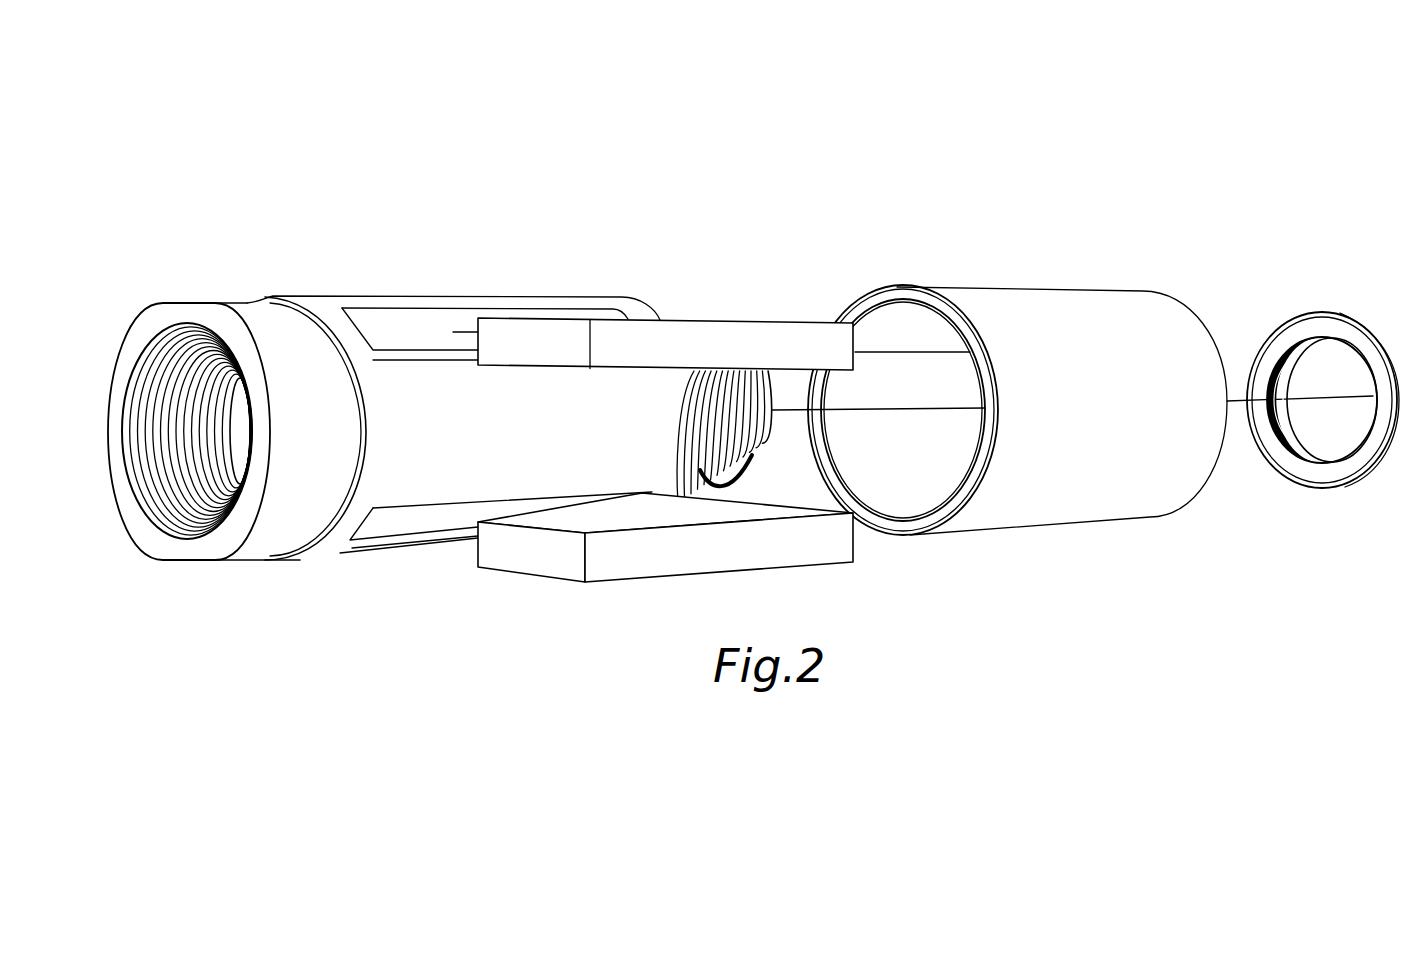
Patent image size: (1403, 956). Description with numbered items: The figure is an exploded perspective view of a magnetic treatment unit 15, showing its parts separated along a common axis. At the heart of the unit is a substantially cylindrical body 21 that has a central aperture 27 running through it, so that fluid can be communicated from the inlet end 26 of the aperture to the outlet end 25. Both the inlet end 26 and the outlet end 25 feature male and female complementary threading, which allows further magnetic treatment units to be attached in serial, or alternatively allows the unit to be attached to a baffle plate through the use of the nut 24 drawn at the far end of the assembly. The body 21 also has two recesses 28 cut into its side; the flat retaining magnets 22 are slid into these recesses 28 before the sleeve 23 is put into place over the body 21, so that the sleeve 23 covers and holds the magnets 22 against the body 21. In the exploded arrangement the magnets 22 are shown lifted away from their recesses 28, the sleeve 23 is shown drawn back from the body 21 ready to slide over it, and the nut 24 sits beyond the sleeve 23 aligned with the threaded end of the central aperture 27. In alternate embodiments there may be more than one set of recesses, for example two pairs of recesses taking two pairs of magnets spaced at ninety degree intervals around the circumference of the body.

The magnetic treatment unit 15 is at (497, 168).
The cylindrical body 21 is at (328, 303).
The retaining magnets 22 is at (750, 349).
The sleeve 23 is at (1052, 318).
The nut 24 is at (1370, 323).
The outlet end of central aperture 25 is at (167, 360).
The inlet end of central aperture 26 is at (762, 443).
The central aperture 27 is at (243, 427).
The recesses of body 28 is at (415, 327).